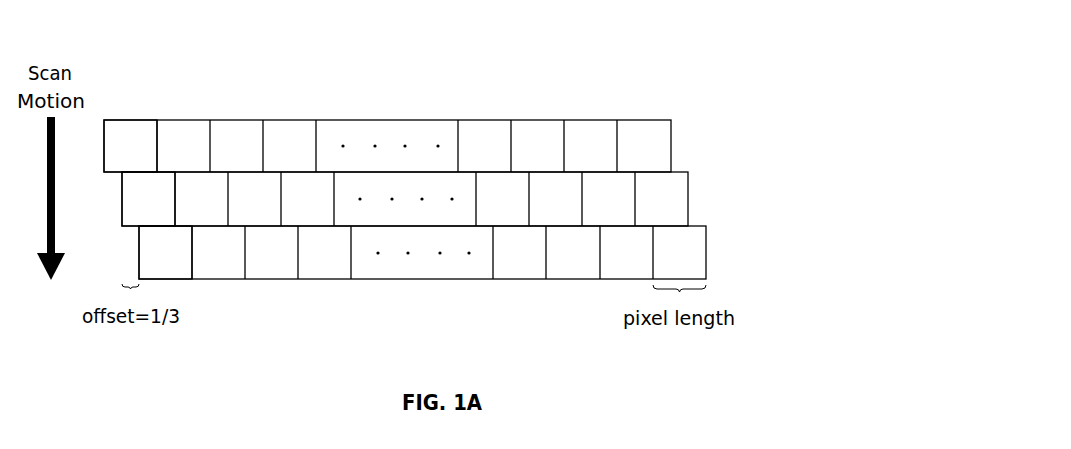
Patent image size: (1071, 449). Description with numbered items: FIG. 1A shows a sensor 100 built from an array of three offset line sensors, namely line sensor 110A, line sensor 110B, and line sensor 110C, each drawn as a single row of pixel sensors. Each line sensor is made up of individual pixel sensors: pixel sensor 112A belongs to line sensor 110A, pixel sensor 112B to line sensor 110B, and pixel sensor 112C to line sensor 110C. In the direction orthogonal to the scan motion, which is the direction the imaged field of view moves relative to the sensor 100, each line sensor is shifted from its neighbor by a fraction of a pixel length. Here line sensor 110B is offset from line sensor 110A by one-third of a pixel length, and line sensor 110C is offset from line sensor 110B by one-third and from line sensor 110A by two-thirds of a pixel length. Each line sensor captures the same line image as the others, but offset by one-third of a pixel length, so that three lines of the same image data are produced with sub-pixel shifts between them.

The sensor 100 is at (679, 96).
The line sensor 110A is at (677, 148).
The line sensor 110B is at (695, 201).
The line sensor 110C is at (713, 254).
The pixel sensor 112A is at (139, 138).
The pixel sensor 112B is at (157, 191).
The pixel sensor 112C is at (173, 259).